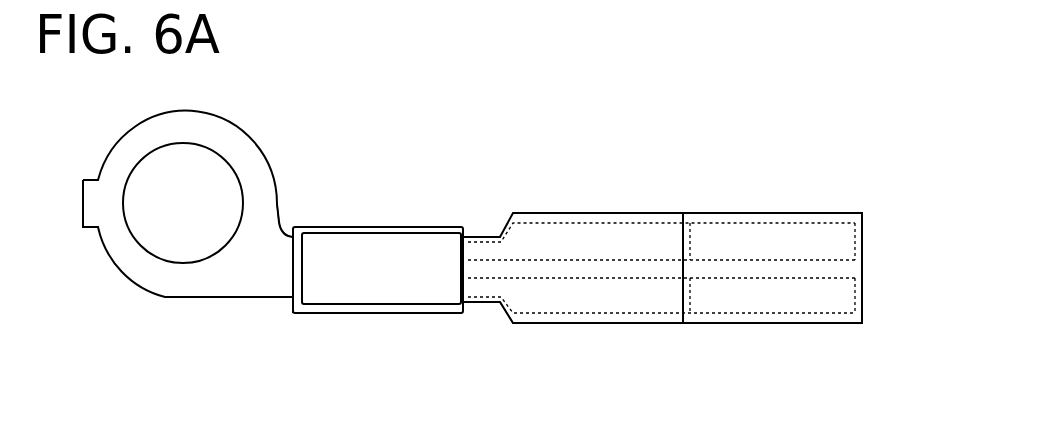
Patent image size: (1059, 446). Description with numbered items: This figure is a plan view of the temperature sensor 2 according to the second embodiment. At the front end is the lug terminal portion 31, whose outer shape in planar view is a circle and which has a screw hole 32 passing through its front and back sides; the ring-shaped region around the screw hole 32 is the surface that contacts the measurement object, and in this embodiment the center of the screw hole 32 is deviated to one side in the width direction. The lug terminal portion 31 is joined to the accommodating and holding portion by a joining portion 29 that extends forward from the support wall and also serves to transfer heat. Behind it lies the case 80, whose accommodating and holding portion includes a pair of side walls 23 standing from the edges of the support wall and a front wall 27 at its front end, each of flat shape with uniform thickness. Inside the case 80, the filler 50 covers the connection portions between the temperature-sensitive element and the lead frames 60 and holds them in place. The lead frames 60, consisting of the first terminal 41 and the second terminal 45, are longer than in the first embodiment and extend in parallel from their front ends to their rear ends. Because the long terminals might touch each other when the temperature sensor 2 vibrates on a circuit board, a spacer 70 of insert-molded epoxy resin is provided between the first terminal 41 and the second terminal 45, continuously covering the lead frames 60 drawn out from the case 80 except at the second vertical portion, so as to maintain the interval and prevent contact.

The temperature sensor 2 is at (540, 128).
The side wall 23 is at (382, 227).
The front wall 27 is at (292, 276).
The joining portion 29 is at (287, 232).
The lug terminal portion 31 is at (160, 299).
The screw hole 32 is at (170, 218).
The first terminal 41 is at (640, 327).
The second terminal 45 is at (653, 213).
The filler 50 is at (420, 265).
The lead frames 60 is at (662, 275).
The spacer 70 is at (525, 324).
The case 80 is at (321, 216).